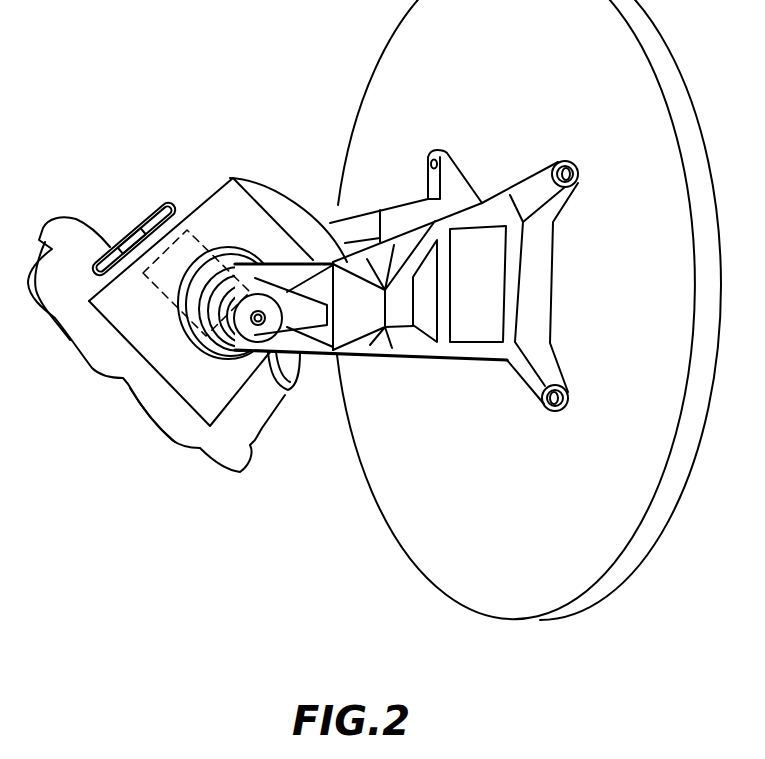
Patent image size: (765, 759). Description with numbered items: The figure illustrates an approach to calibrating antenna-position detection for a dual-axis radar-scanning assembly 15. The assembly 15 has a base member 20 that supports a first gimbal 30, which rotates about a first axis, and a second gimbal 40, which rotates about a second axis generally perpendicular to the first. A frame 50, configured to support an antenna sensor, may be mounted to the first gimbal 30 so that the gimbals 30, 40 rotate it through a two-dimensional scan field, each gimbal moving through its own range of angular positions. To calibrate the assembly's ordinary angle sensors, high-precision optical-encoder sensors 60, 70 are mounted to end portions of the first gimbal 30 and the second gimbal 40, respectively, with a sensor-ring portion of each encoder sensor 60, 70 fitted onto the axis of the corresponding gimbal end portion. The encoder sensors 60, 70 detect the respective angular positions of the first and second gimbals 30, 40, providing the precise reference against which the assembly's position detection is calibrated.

The dual-axis radar-scanning assembly 15 is at (85, 58).
The base member 20 is at (448, 348).
The first gimbal 30 is at (173, 208).
The second gimbal 40 is at (125, 322).
The frame 50 is at (188, 373).
The optical-encoder sensor 60 is at (296, 380).
The optical-encoder sensor 70 is at (275, 303).